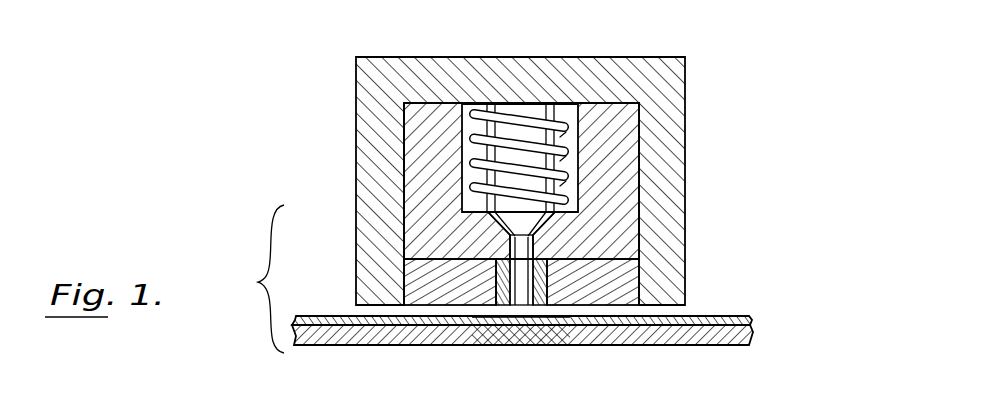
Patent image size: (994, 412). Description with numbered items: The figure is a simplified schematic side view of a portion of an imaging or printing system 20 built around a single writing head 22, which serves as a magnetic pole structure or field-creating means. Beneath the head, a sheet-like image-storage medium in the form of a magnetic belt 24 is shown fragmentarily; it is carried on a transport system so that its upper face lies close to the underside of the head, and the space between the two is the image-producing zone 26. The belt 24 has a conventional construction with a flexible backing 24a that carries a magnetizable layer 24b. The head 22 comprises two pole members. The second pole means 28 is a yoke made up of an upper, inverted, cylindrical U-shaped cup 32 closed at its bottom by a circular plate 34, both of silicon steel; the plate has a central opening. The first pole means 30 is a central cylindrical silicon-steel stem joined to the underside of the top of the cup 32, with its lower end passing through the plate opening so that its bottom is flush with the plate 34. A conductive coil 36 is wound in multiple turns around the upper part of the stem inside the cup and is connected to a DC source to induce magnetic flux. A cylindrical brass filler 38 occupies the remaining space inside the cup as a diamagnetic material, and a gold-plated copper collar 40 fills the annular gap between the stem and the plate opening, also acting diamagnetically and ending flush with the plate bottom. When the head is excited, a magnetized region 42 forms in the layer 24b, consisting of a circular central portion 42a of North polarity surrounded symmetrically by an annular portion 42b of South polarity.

The imaging system 20 is at (718, 144).
The writing head 22 is at (305, 140).
The magnetic belt 24 is at (587, 329).
The flexible backing 24a is at (720, 344).
The magnetizable layer 24b is at (733, 317).
The image-producing zone 26 is at (692, 306).
The second pole means 28 is at (350, 279).
The first pole means 30 is at (548, 220).
The cup 32 is at (356, 192).
The circular plate 34 is at (432, 289).
The conductive coil 36 is at (562, 130).
The brass filler 38 is at (433, 130).
The gold-plated copper collar 40 is at (539, 306).
The magnetized region 42 is at (524, 362).
The central portion 42a is at (522, 345).
The annular portion 42b is at (607, 371).